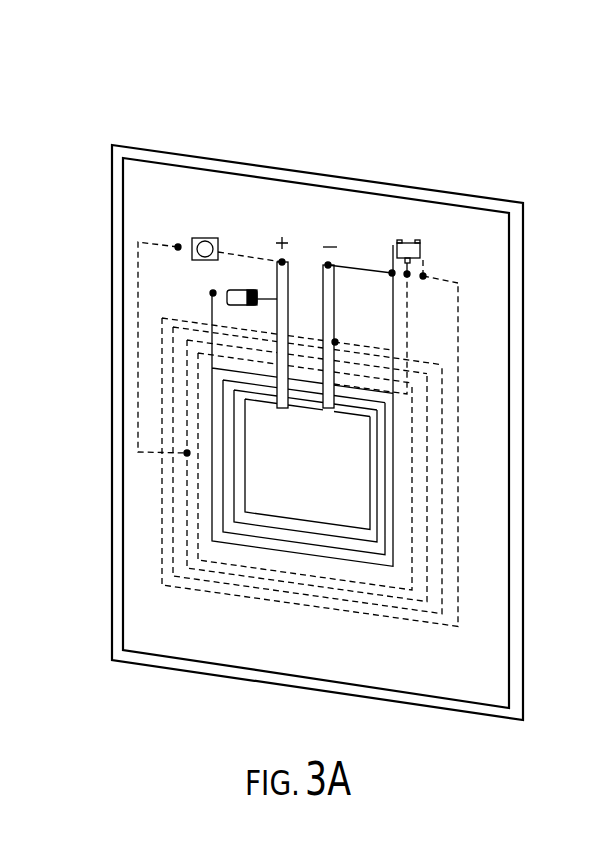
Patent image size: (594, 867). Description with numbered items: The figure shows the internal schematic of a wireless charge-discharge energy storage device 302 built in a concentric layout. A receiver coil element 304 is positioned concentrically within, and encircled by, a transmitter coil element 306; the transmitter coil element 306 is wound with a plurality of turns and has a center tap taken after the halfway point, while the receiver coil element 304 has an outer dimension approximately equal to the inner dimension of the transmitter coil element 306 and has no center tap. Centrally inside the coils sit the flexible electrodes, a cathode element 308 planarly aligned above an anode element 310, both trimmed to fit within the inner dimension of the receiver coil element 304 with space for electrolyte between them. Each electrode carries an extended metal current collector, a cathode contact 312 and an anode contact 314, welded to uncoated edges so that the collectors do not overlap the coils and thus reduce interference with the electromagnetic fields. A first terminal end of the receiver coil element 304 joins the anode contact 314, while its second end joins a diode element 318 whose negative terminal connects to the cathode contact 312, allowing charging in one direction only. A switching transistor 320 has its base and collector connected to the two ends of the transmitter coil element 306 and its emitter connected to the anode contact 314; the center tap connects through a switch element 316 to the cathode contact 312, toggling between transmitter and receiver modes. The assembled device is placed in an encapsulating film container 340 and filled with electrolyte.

The WCD energy storage device 302 is at (232, 156).
The receiver coil element 304 is at (212, 473).
The transmitter coil element 306 is at (162, 572).
The cathode element 308 is at (325, 495).
The anode element 310 is at (280, 510).
The cathode contact 312 is at (276, 277).
The anode contact 314 is at (322, 300).
The switch element 316 is at (198, 237).
The diode element 318 is at (238, 290).
The switching transistor 320 is at (407, 242).
The encapsulating film container 340 is at (520, 607).